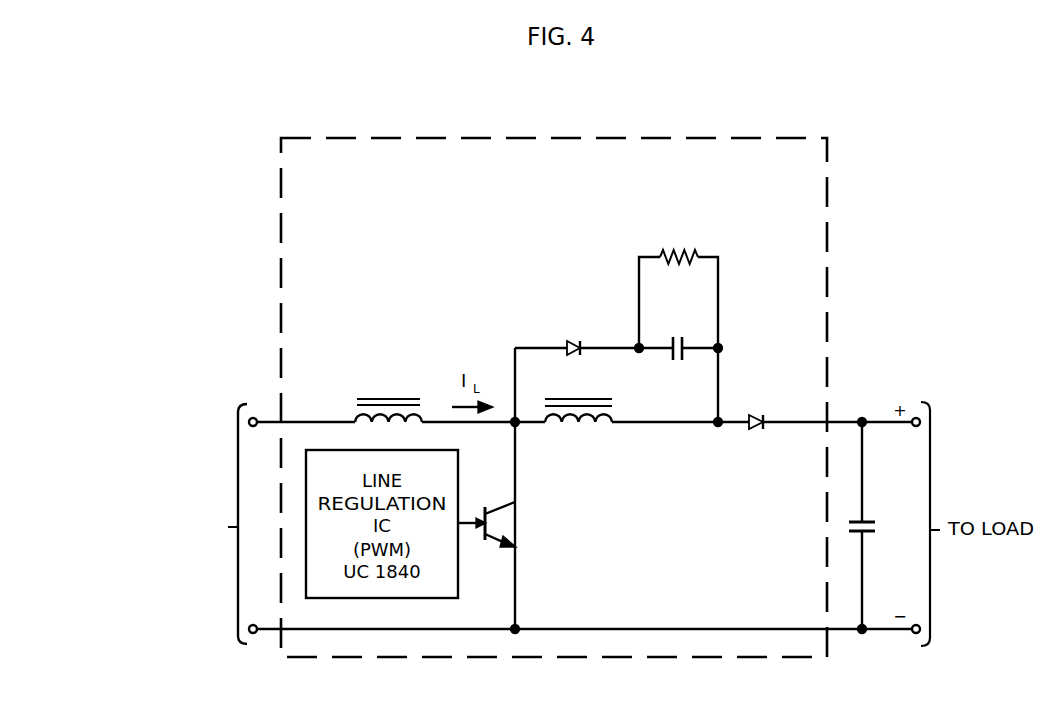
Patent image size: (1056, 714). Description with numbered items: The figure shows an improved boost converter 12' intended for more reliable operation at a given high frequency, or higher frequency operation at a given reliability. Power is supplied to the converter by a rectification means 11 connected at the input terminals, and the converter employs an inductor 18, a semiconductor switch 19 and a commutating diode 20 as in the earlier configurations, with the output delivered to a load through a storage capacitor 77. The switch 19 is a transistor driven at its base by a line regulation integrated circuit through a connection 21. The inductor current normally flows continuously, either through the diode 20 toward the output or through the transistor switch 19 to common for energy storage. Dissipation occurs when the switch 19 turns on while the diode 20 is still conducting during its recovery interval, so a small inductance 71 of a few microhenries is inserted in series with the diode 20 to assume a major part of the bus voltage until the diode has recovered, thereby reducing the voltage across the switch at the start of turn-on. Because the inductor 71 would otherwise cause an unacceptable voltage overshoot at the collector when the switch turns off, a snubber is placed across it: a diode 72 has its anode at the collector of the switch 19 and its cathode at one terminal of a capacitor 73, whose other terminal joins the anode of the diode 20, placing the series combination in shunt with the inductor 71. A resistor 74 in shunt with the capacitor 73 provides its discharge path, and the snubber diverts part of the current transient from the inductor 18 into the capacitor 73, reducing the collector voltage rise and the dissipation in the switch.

The boost converter 12' is at (554, 397).
The rectification means 11 is at (203, 573).
The inductor 18 is at (348, 402).
The base drive connection from line regulation IC 21 is at (466, 480).
The semiconductor switch 19 is at (496, 551).
The diode 72 is at (568, 365).
The inductance 71 is at (589, 395).
The capacitor 73 is at (671, 373).
The resistor 74 is at (713, 264).
The diode 20 is at (753, 440).
The output capacitor 77 is at (850, 518).